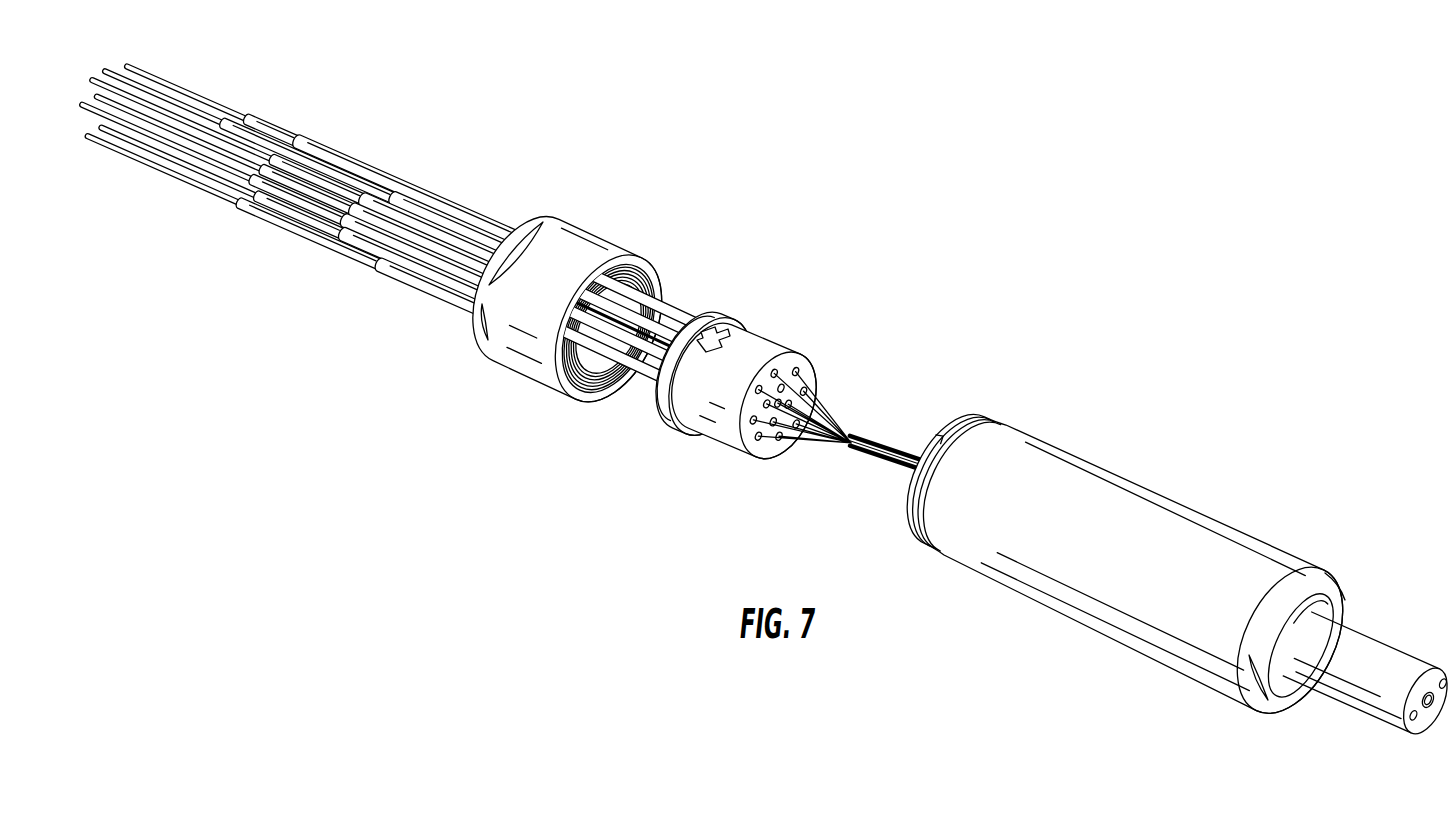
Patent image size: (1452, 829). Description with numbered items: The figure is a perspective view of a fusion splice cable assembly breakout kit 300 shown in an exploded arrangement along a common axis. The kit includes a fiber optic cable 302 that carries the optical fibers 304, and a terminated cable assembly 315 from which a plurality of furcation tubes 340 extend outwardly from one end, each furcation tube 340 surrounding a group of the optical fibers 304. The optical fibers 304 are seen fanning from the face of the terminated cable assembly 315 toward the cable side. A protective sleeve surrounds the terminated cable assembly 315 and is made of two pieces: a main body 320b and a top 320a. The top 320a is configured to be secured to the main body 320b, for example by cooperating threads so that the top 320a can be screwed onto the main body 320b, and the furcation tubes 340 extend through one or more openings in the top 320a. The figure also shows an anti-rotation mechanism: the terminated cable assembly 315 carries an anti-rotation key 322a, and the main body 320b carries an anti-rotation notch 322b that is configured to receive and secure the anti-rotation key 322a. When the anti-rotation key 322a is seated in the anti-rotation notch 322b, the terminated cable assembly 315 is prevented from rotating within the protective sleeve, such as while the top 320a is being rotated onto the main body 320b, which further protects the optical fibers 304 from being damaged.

The fusion splice cable assembly breakout kit 300 is at (764, 399).
The fiber optic cable 302 is at (1375, 655).
The optical fibers 304 is at (850, 447).
The terminated cable assembly 315 is at (712, 405).
The top 320a is at (580, 235).
The main body 320b is at (1130, 520).
The anti-rotation key 322a is at (717, 326).
The anti-rotation notch 322b is at (934, 440).
The furcation tubes 340 is at (668, 300).